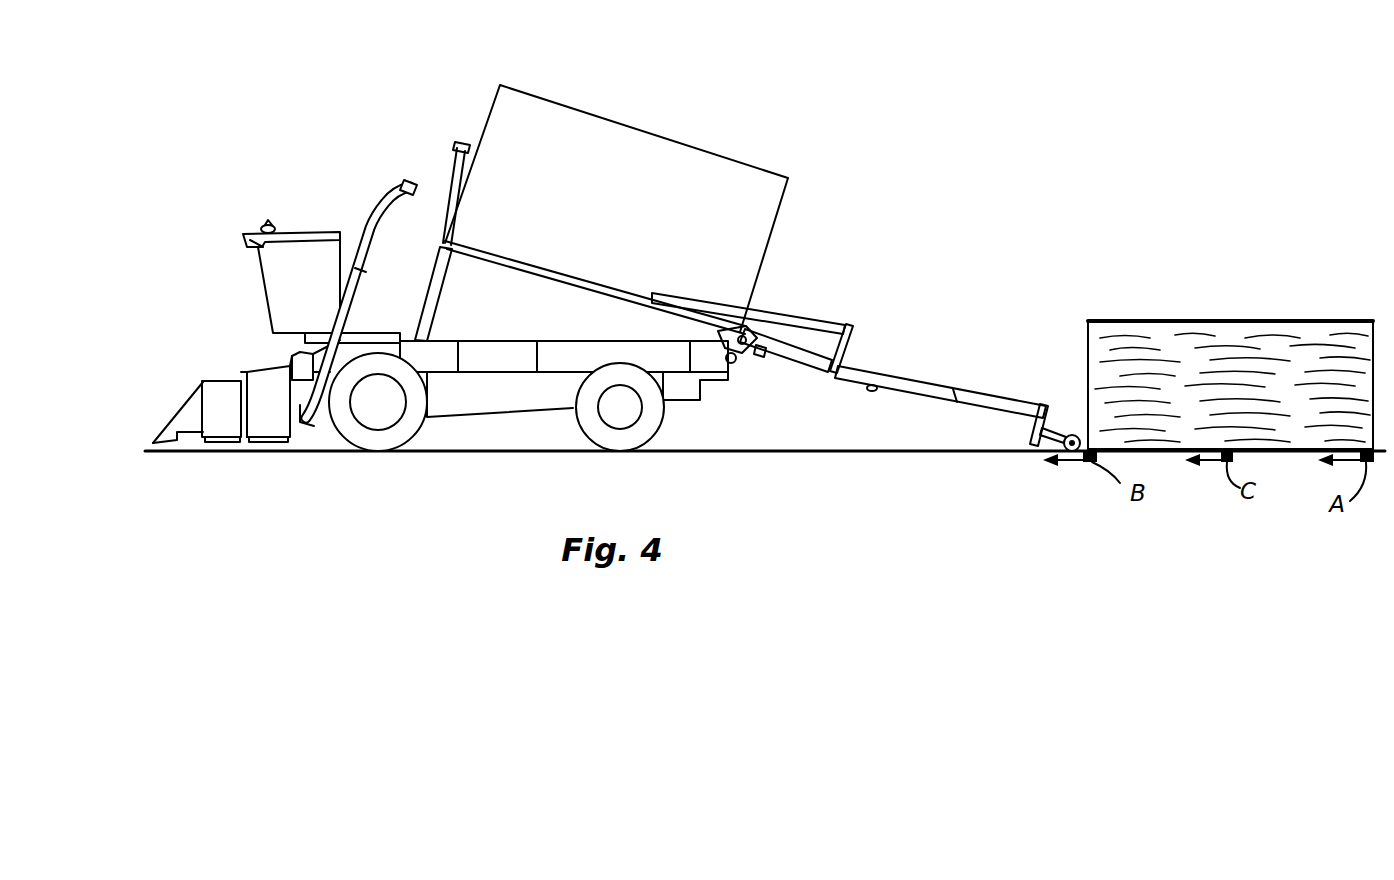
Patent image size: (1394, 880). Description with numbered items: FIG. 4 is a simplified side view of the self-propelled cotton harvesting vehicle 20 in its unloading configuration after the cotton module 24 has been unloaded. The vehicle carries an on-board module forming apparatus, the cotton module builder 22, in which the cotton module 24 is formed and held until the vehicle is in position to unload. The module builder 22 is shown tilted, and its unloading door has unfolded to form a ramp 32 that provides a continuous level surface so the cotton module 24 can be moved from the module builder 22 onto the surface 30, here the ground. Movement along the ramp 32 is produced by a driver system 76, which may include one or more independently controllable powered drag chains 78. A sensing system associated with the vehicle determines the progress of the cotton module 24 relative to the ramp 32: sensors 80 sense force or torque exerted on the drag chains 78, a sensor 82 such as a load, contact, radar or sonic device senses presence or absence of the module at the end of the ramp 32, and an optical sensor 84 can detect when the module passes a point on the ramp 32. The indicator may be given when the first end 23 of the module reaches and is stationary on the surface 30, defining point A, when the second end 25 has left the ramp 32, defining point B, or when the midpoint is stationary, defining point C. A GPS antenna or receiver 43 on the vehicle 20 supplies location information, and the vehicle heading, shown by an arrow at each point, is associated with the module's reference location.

The cotton harvesting vehicle 20 is at (616, 278).
The cotton module builder 22 is at (620, 116).
The first end of cotton module 23 is at (1374, 331).
The cotton module 24 is at (1172, 320).
The second end of cotton module 25 is at (1088, 357).
The surface 30 is at (944, 458).
The ramp 32 is at (898, 395).
The receiver 43 is at (266, 223).
The driver system 76 is at (769, 381).
The sensors 80 is at (760, 358).
The drag chains 78 is at (860, 368).
The sensor 82 is at (1035, 470).
The optical sensor 84 is at (1035, 447).